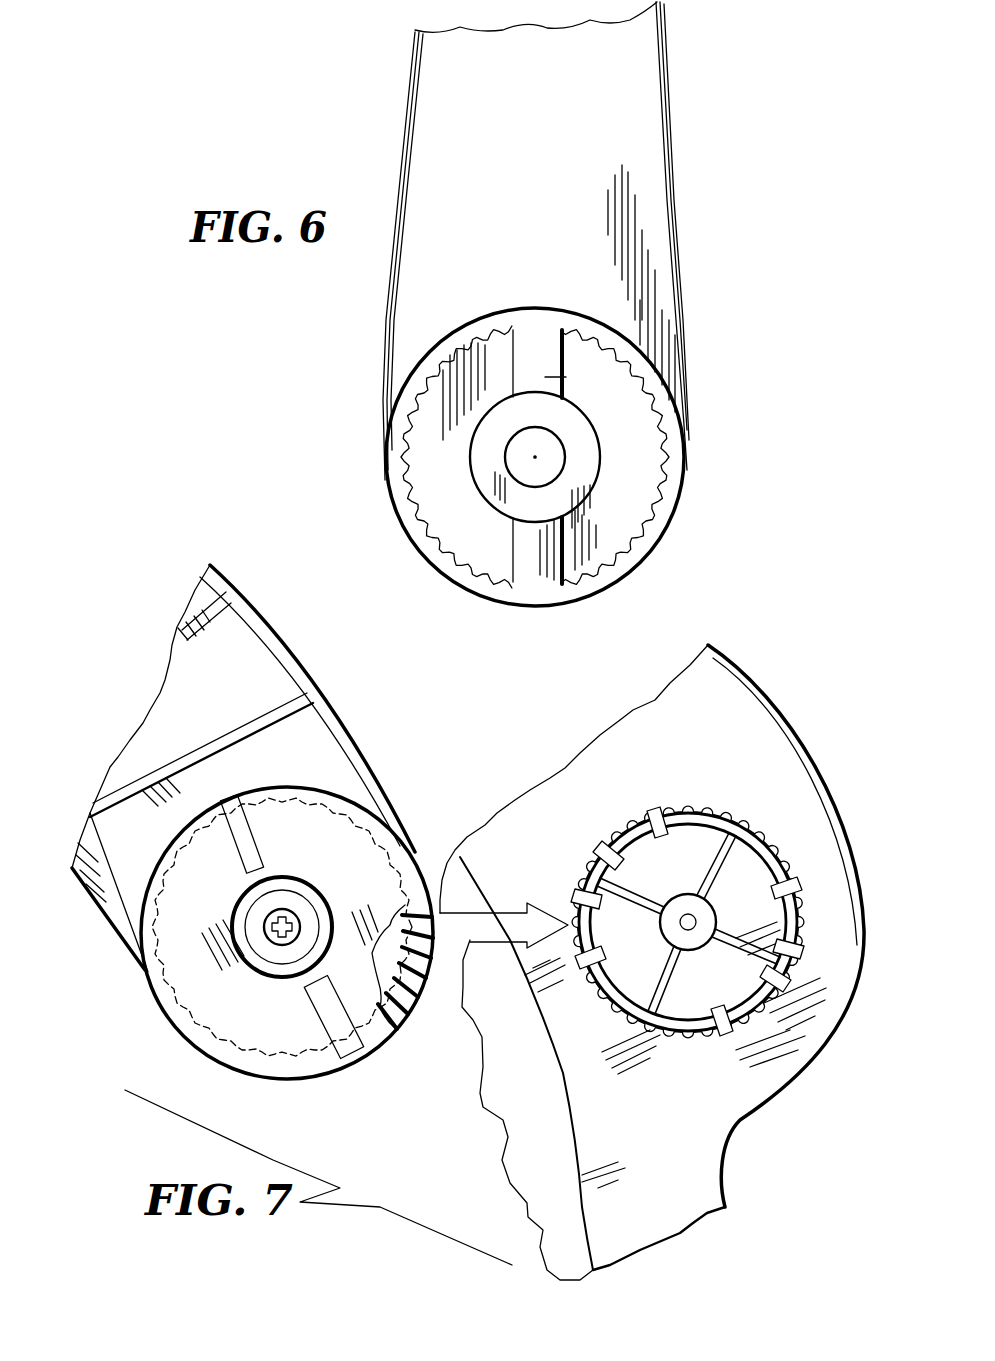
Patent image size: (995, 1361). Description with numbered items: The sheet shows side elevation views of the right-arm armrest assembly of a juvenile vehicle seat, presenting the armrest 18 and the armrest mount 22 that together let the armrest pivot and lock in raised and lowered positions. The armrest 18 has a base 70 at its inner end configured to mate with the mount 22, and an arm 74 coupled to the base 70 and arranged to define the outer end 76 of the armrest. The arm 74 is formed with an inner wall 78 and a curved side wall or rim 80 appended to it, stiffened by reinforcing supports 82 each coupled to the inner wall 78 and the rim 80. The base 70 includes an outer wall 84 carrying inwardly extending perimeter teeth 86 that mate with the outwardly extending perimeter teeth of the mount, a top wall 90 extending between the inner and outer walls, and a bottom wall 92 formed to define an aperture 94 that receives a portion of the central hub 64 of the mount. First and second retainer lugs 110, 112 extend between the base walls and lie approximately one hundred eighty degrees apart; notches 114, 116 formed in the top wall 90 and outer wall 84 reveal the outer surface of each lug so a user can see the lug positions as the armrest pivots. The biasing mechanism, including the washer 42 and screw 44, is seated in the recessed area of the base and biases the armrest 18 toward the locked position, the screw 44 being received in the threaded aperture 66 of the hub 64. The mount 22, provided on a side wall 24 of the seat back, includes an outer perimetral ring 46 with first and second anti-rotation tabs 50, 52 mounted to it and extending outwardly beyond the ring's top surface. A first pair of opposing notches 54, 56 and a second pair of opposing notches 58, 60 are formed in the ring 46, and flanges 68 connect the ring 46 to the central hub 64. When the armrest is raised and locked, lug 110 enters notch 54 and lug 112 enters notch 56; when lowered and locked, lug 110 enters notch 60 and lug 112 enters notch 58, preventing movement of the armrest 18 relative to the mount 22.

In FIG. 6, the armrest 18 is at (705, 192).
In FIG. 7, the armrest mount 22 is at (674, 790).
In FIG. 7, the side wall 24 is at (730, 693).
In FIG. 7, the washer 42 is at (287, 898).
In FIG. 7, the screw 44 is at (275, 940).
In FIG. 7, the outer perimetral ring 46 is at (687, 1032).
In FIG. 7, the first anti-rotation tab 50 is at (596, 850).
In FIG. 7, the second anti-rotation tab 52 is at (803, 953).
In FIG. 7, the first notch 54 is at (645, 840).
In FIG. 7, the third notch 56 is at (765, 1005).
In FIG. 7, the fourth notch 58 is at (598, 955).
In FIG. 7, the second notch 60 is at (807, 897).
In FIG. 7, the central hub 64 is at (703, 913).
In FIG. 7, the threaded aperture 66 is at (694, 920).
In FIG. 7, the flanges 68 is at (717, 860).
In FIG. 6, the base 70 is at (692, 483).
In FIG. 7, the base 70 is at (158, 1032).
In FIG. 6, the arm 74 is at (400, 125).
In FIG. 7, the arm 74 is at (253, 601).
In FIG. 6, the outer end 76 is at (405, 553).
In FIG. 6, the inner wall 78 is at (603, 120).
In FIG. 7, the inner wall 78 is at (187, 670).
In FIG. 7, the rim 80 is at (307, 678).
In FIG. 7, the reinforcing supports 82 is at (200, 600).
In FIG. 6, the outer wall 84 is at (410, 513).
In FIG. 7, the outer wall 84 is at (410, 1007).
In FIG. 6, the perimeter teeth 86 is at (410, 470).
In FIG. 7, the perimeter teeth 86 is at (360, 817).
In FIG. 6, the top wall 90 is at (428, 432).
In FIG. 7, the top wall 90 is at (182, 917).
In FIG. 6, the bottom wall 92 is at (580, 482).
In FIG. 7, the bottom wall 92 is at (325, 910).
In FIG. 6, the aperture 94 is at (515, 466).
In FIG. 6, the first retainer lug 110 is at (550, 377).
In FIG. 7, the first retainer lug 110 is at (250, 847).
In FIG. 6, the second retainer lug 112 is at (563, 548).
In FIG. 7, the second retainer lug 112 is at (322, 1007).
In FIG. 7, the notch 114 is at (232, 838).
In FIG. 7, the notch 116 is at (342, 1030).